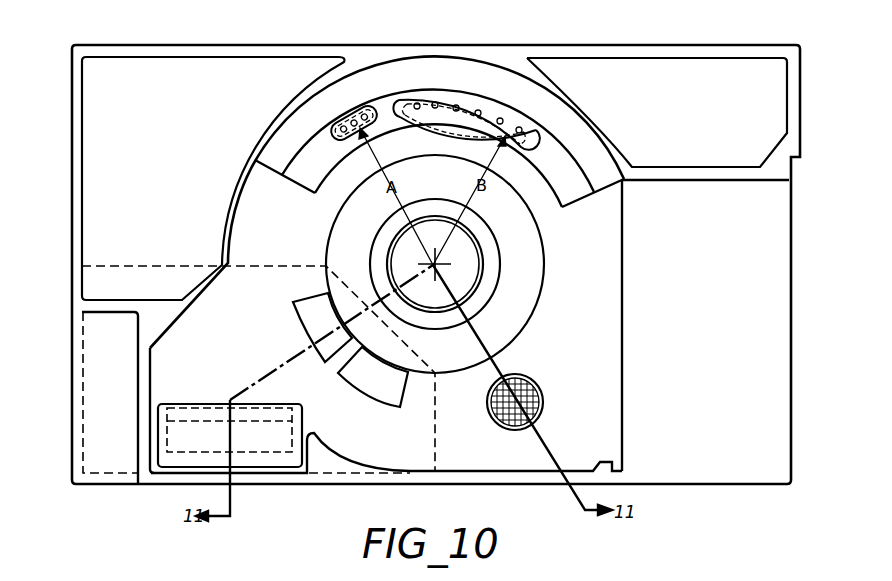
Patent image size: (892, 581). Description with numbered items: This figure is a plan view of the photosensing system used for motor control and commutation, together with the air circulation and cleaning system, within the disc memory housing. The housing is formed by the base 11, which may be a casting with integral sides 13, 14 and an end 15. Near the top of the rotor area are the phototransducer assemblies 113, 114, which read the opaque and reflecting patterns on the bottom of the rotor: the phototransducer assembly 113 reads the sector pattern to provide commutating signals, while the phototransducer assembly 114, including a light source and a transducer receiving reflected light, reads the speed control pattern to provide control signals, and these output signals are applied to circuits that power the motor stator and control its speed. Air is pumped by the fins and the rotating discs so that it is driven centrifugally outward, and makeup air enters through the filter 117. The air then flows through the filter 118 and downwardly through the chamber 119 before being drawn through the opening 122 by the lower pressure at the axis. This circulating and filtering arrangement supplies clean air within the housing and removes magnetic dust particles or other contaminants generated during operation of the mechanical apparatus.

The base 11 is at (718, 428).
The integral side 13 is at (616, 45).
The integral side 14 is at (156, 486).
The end 15 is at (72, 172).
The phototransducer assembly 113 is at (455, 98).
The phototransducer assembly 114 is at (354, 108).
The filter 117 is at (544, 396).
The filter 118 is at (207, 412).
The chamber 119 is at (266, 440).
The opening 122 is at (308, 318).